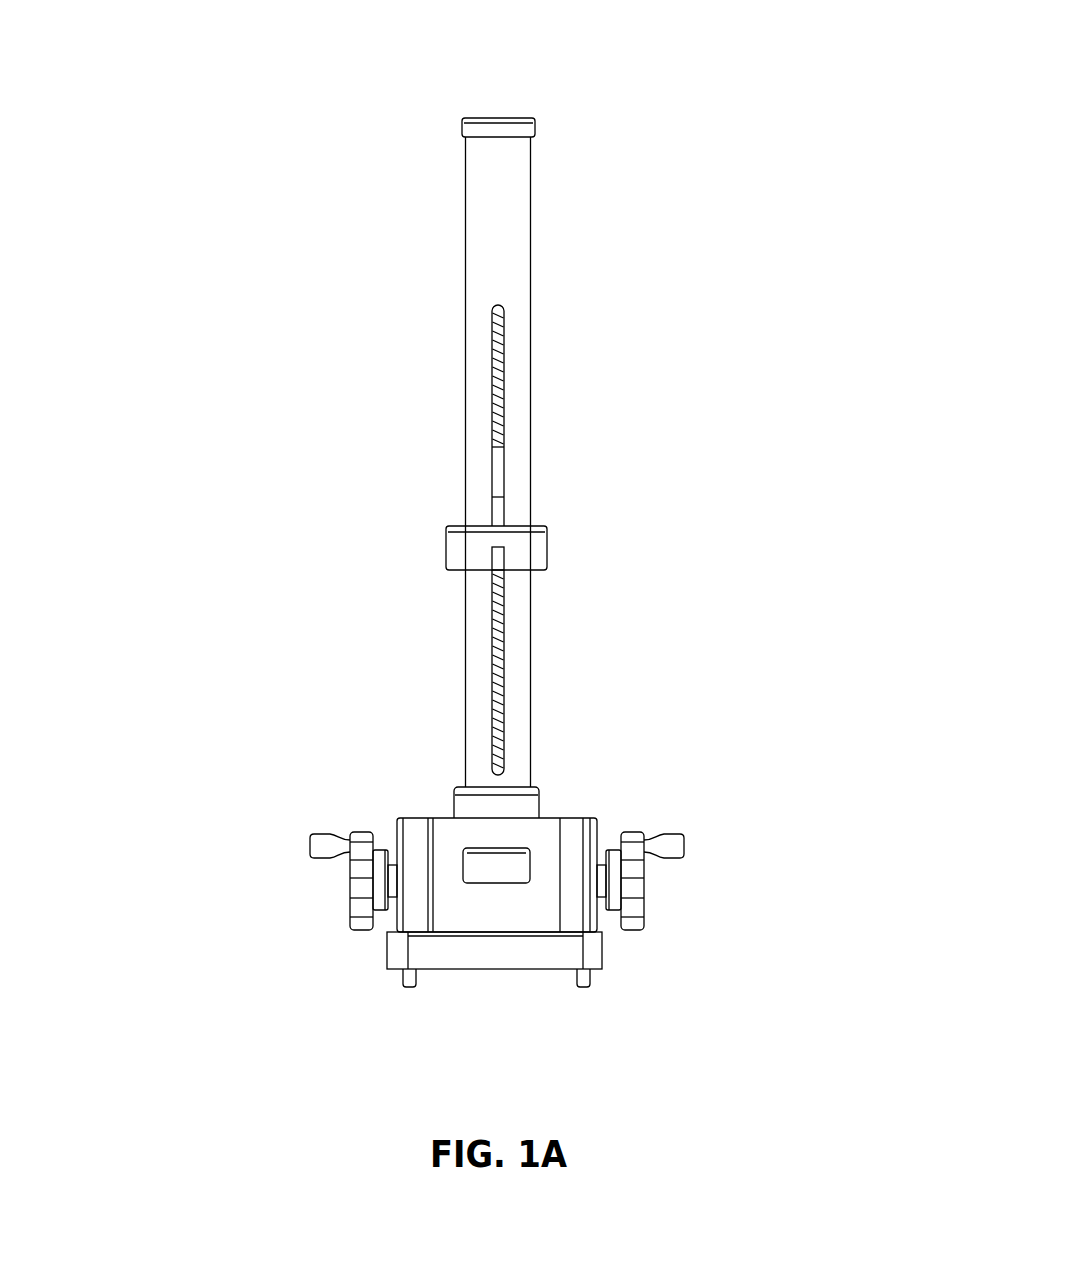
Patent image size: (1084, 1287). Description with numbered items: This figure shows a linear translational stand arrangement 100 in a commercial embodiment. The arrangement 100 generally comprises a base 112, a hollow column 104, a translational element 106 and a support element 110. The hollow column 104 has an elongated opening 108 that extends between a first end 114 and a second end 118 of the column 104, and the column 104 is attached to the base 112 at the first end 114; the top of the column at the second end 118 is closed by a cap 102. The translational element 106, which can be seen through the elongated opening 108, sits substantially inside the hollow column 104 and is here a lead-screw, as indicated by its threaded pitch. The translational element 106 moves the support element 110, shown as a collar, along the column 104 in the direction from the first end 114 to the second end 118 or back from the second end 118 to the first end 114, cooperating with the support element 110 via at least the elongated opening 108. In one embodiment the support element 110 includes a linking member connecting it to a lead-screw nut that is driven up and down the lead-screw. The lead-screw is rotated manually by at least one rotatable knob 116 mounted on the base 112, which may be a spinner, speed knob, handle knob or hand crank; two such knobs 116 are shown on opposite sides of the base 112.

The linear translational stand arrangement 100 is at (240, 55).
The cap 102 is at (487, 117).
The hollow column 104 is at (532, 260).
The translational element 106 is at (480, 308).
The elongated opening 108 is at (505, 477).
The support element 110 is at (550, 555).
The base 112 is at (573, 817).
The first end 114 is at (438, 800).
The rotatable knob 116 is at (640, 955).
The second end 118 is at (580, 120).